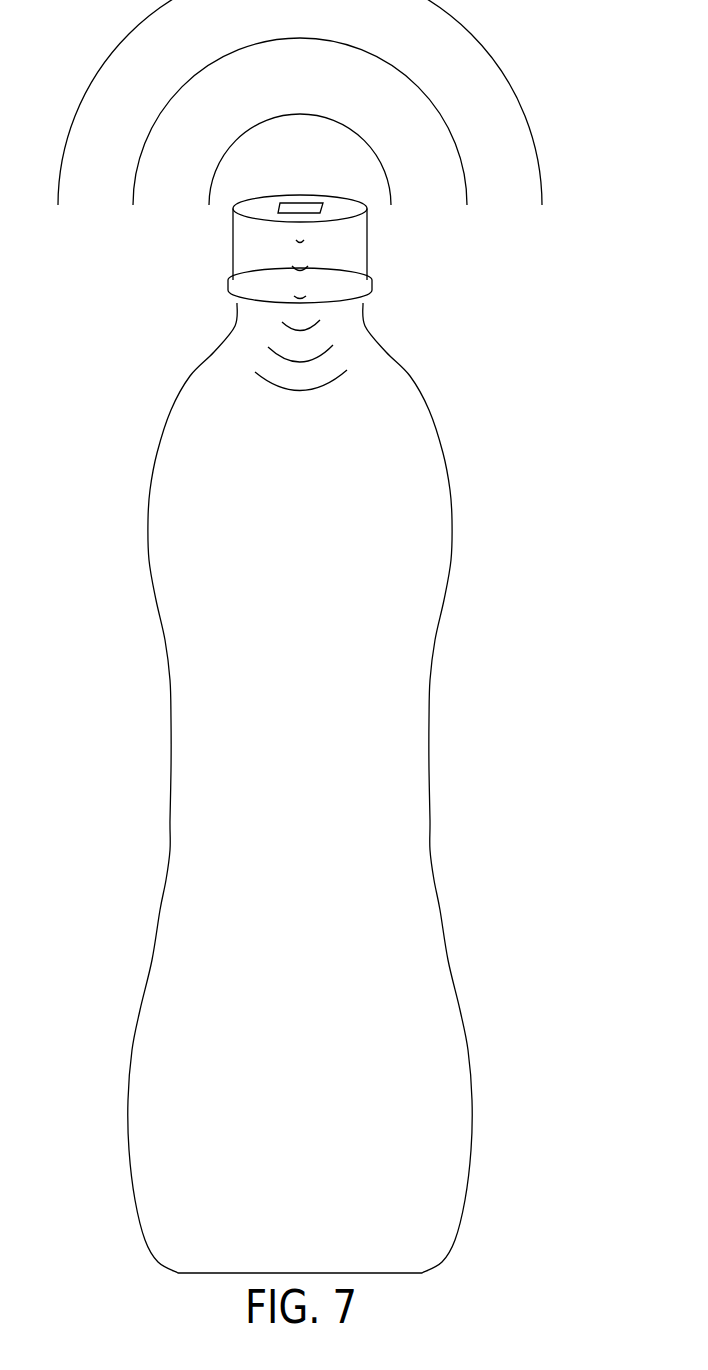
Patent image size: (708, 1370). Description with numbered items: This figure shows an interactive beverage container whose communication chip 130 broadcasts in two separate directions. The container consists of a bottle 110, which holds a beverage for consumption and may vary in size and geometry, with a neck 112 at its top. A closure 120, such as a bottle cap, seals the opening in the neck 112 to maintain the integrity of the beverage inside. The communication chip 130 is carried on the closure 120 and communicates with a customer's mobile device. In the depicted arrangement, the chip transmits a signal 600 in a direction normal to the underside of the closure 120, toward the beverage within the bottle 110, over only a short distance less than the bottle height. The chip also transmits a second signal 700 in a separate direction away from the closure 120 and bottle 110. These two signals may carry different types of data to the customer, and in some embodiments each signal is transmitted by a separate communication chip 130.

The signal 700 is at (524, 114).
The communication chip 130 is at (302, 201).
The closure 120 is at (353, 258).
The neck 112 is at (367, 318).
The signal 600 is at (327, 384).
The bottle 110 is at (428, 512).